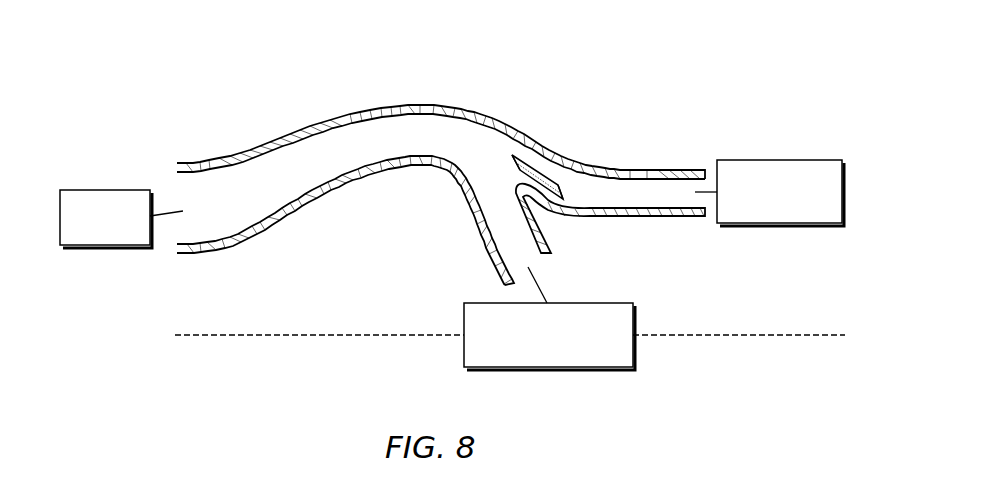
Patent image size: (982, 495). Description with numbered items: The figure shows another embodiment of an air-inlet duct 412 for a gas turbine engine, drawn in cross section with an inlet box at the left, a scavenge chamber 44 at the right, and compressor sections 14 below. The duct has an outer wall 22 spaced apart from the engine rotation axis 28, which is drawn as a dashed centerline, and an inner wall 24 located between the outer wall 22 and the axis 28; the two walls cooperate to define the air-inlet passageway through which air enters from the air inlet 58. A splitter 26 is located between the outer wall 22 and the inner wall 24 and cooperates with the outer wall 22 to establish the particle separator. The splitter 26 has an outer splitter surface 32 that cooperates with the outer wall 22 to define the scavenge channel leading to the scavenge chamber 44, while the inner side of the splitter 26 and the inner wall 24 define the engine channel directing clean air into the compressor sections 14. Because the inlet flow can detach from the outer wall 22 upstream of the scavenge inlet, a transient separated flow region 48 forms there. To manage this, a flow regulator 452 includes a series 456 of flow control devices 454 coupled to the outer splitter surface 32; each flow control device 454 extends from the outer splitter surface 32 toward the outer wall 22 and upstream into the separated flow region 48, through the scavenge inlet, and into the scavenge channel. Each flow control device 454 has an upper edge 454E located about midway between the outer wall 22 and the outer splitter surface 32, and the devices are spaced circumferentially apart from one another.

The compressor sections 14 is at (550, 368).
The outer wall 22 is at (222, 165).
The inner wall 24 is at (293, 225).
The splitter 26 is at (548, 218).
The engine rotation axis 28 is at (248, 336).
The outer splitter surface 32 is at (638, 200).
The scavenge chamber 44 is at (781, 226).
The separated flow region 48 is at (483, 148).
The air inlet 58 is at (105, 250).
The air-inlet duct 412 is at (654, 112).
The flow regulator 452 is at (532, 98).
The flow control device 454 is at (510, 169).
The upper edge 454E is at (557, 184).
The series of flow control devices 456 is at (547, 168).